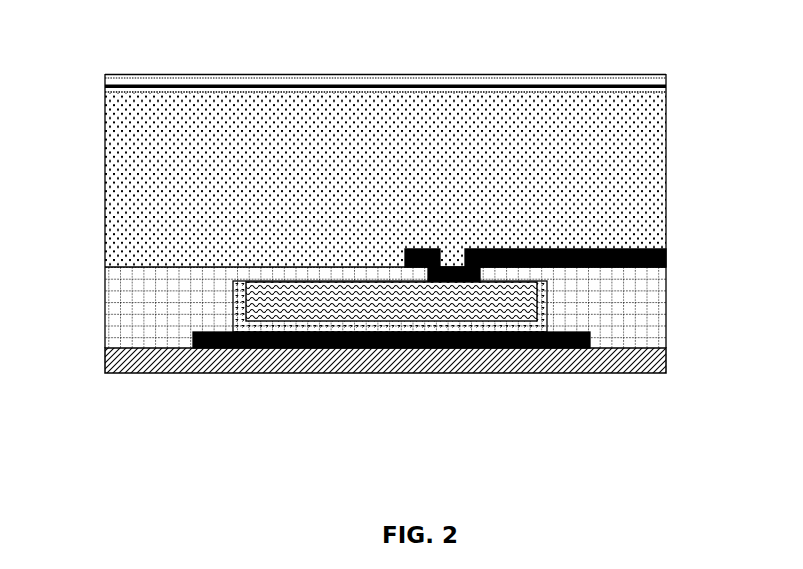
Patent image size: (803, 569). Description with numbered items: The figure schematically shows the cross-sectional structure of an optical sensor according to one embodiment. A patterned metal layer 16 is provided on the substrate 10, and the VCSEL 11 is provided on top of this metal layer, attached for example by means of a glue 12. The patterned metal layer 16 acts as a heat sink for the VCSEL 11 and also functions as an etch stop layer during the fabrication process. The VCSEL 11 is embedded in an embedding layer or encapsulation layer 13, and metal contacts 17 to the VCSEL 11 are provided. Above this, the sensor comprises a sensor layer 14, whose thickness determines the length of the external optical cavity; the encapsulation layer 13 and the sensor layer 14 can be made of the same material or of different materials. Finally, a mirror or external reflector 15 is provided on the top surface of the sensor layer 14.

The substrate 10 is at (120, 362).
The VCSEL 11 is at (465, 303).
The glue 12 is at (550, 303).
The embedding layer or encapsulation layer 13 is at (130, 312).
The sensor layer 14 is at (130, 177).
The mirror or external reflector 15 is at (177, 77).
The patterned metal layer 16 is at (295, 350).
The metal contacts 17 is at (668, 256).